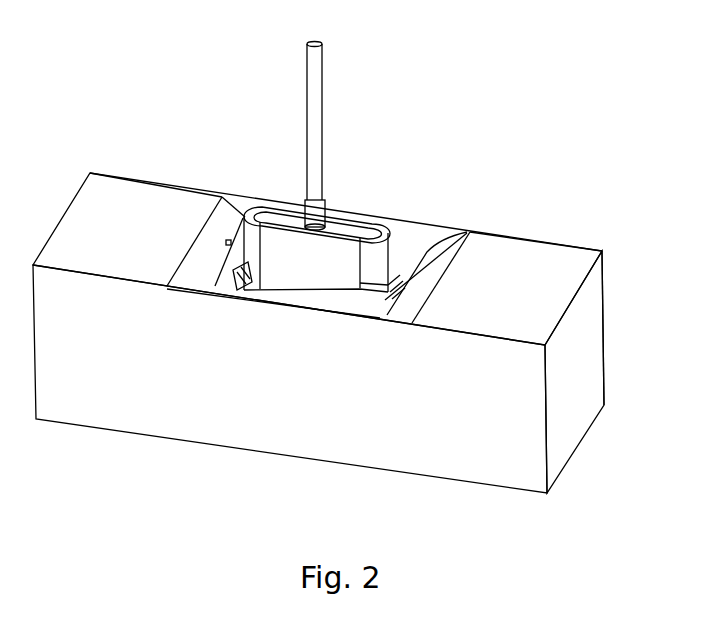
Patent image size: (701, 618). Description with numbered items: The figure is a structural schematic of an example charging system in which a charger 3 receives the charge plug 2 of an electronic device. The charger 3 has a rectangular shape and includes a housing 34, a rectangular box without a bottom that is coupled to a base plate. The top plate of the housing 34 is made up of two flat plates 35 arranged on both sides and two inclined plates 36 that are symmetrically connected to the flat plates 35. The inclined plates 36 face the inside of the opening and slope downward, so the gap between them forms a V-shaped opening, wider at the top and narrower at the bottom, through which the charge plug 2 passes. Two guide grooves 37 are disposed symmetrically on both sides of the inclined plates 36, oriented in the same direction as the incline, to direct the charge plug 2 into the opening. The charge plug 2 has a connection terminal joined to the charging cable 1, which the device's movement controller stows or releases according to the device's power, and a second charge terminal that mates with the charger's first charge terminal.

The charging cable 1 is at (313, 80).
The charge plug 2 is at (336, 243).
The charger 3 is at (260, 441).
The housing 34 is at (593, 290).
The flat plates 35 is at (143, 200).
The inclined plates 36 is at (228, 220).
The guide grooves 37 is at (245, 292).